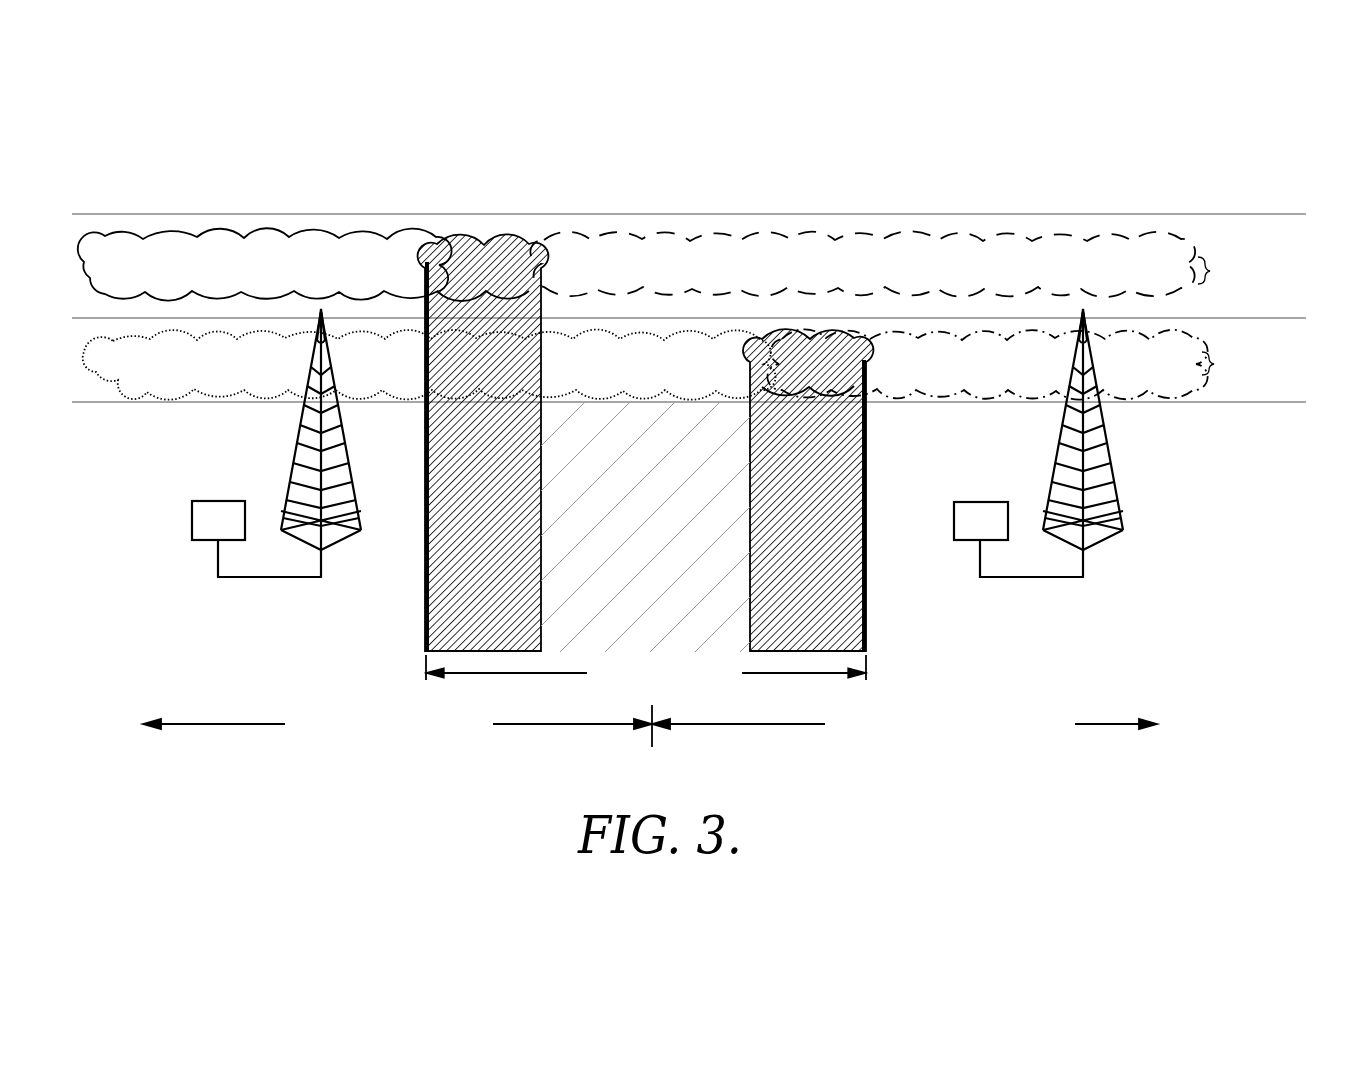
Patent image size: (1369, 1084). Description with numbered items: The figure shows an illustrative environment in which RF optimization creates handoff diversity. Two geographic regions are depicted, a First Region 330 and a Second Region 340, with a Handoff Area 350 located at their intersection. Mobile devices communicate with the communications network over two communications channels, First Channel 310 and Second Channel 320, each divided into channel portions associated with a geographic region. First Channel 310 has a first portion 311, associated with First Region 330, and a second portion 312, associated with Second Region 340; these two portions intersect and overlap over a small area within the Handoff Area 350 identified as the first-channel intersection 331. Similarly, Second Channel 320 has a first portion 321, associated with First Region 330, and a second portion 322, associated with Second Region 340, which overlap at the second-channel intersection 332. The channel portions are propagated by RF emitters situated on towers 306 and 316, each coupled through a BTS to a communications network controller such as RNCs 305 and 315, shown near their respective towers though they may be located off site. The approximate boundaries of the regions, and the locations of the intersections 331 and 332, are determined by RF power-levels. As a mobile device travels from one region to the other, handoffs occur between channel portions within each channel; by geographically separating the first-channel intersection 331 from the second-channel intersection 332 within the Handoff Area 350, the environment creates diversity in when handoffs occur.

The RNC 305 is at (217, 500).
The tower 306 is at (297, 444).
The First Channel 310 is at (1320, 239).
The Portion 1A 311 is at (303, 232).
The Portion 1B 312 is at (1068, 250).
The RNC 315 is at (968, 501).
The tower 316 is at (1108, 446).
The Second Channel 320 is at (1323, 380).
The Portion 2A 321 is at (303, 332).
The Portion 2B 322 is at (1070, 352).
The First Region 330 is at (397, 731).
The first-channel intersection 331 is at (426, 596).
The second-channel intersection 332 is at (866, 600).
The Second Region 340 is at (904, 735).
The Handoff Area 350 is at (646, 524).